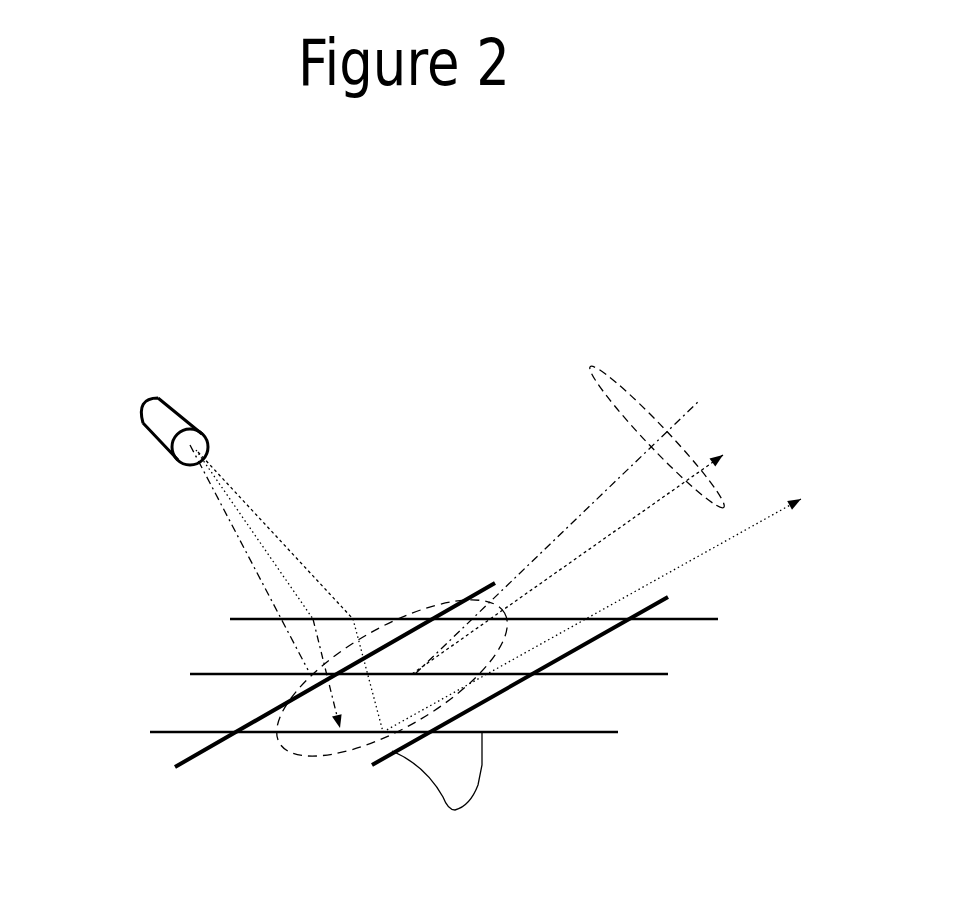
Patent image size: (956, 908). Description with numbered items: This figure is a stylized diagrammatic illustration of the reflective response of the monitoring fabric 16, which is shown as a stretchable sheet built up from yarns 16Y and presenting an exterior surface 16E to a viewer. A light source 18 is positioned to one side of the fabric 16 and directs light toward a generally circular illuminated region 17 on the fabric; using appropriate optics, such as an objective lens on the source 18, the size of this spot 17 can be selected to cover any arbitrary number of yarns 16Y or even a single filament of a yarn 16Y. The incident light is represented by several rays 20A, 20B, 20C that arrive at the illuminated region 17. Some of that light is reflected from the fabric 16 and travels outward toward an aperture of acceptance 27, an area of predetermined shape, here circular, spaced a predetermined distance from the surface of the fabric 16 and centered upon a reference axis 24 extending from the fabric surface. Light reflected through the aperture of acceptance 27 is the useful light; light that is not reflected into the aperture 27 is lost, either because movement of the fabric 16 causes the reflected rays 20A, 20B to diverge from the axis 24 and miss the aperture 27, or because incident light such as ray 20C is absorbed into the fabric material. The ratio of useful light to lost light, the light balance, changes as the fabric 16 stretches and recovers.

The monitoring fabric 16 is at (603, 757).
The exterior surface 16E is at (643, 640).
The yarns 16Y is at (440, 797).
The illuminated region 17 is at (287, 692).
The source 18 is at (161, 397).
The light 20A is at (324, 588).
The light 20B is at (273, 565).
The light 20C is at (250, 558).
The reference axis 24 is at (623, 480).
The aperture of acceptance 27 is at (620, 397).